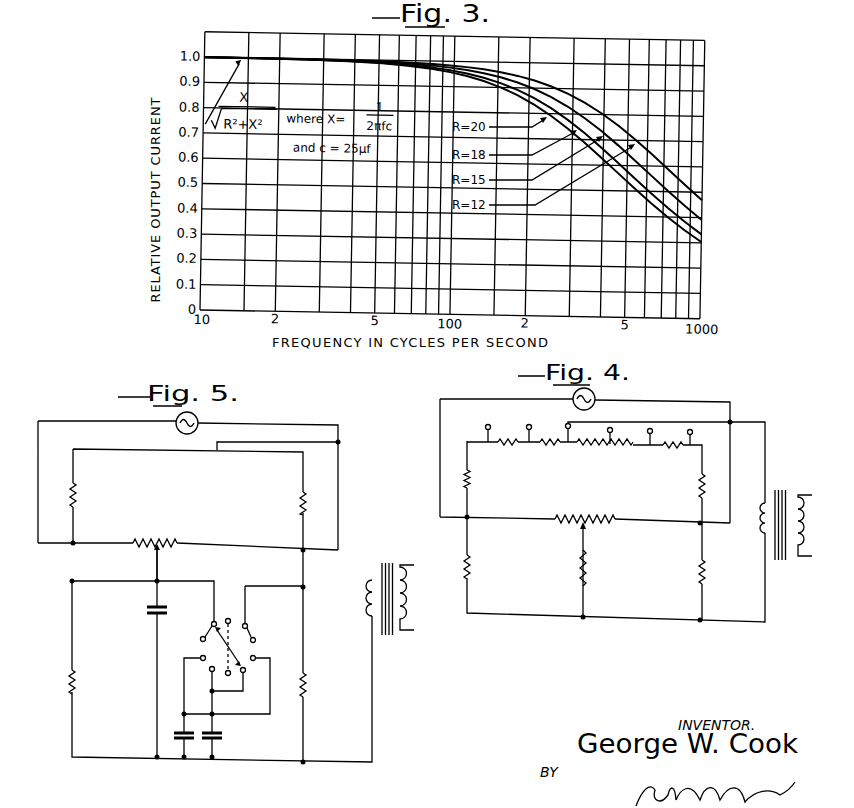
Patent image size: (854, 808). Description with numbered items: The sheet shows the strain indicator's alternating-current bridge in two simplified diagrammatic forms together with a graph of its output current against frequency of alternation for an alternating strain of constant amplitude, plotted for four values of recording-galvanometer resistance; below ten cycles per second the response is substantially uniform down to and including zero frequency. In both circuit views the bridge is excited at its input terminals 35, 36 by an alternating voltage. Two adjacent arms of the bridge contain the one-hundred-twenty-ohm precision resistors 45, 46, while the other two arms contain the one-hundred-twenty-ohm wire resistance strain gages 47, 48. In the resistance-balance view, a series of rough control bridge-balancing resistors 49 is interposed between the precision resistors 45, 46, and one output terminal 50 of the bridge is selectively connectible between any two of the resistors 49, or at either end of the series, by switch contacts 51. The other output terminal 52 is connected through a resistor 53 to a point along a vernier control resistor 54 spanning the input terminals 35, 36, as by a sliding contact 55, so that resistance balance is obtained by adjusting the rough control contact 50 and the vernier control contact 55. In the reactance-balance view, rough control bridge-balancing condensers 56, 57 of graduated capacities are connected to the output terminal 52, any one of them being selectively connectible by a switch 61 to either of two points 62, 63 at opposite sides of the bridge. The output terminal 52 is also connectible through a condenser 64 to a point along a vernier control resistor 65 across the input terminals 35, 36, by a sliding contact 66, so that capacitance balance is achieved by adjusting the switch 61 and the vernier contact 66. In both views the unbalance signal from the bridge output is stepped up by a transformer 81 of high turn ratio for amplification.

In FIG. 5, the input terminal 35 is at (75, 541).
In FIG. 4, the input terminal 35 is at (470, 515).
In FIG. 5, the input terminal 36 is at (302, 548).
In FIG. 4, the input terminal 36 is at (698, 528).
In FIG. 5, the precision resistor 45 is at (80, 497).
In FIG. 4, the precision resistor 45 is at (472, 480).
In FIG. 5, the precision resistor 46 is at (298, 502).
In FIG. 4, the precision resistor 46 is at (698, 488).
In FIG. 5, the wire resistance strain gage 47 is at (78, 683).
In FIG. 4, the wire resistance strain gage 47 is at (472, 571).
In FIG. 5, the wire resistance strain gage 48 is at (306, 691).
In FIG. 4, the wire resistance strain gage 48 is at (697, 578).
In FIG. 4, the rough control bridge-balancing resistors 49 is at (518, 444).
In FIG. 4, the output terminal 50 is at (567, 424).
In FIG. 4, the switch contacts 51 is at (528, 426).
In FIG. 5, the output terminal 52 is at (303, 765).
In FIG. 4, the output terminal 52 is at (700, 623).
In FIG. 4, the resistor 53 is at (587, 575).
In FIG. 4, the vernier control resistor 54 is at (612, 515).
In FIG. 4, the sliding contact 55 is at (580, 527).
In FIG. 5, the rough control bridge-balancing condenser 56 is at (177, 730).
In FIG. 5, the rough control bridge-balancing condenser 57 is at (225, 736).
In FIG. 5, the switch 61 is at (238, 656).
In FIG. 5, the point 62 is at (70, 583).
In FIG. 5, the point 63 is at (306, 588).
In FIG. 5, the condenser 64 is at (152, 615).
In FIG. 5, the vernier control resistor 65 is at (160, 541).
In FIG. 5, the sliding contact 66 is at (160, 556).
In FIG. 5, the transformer 81 is at (392, 563).
In FIG. 4, the transformer 81 is at (786, 486).